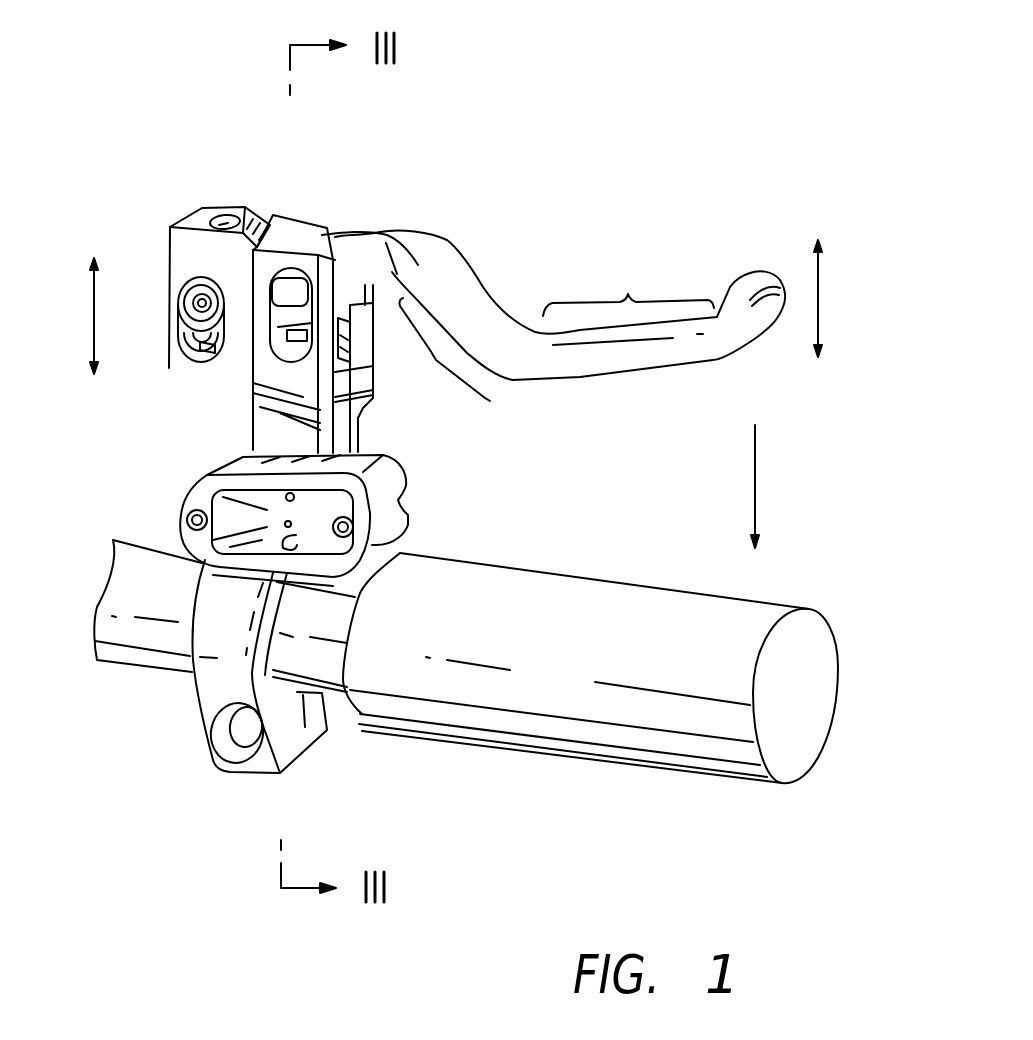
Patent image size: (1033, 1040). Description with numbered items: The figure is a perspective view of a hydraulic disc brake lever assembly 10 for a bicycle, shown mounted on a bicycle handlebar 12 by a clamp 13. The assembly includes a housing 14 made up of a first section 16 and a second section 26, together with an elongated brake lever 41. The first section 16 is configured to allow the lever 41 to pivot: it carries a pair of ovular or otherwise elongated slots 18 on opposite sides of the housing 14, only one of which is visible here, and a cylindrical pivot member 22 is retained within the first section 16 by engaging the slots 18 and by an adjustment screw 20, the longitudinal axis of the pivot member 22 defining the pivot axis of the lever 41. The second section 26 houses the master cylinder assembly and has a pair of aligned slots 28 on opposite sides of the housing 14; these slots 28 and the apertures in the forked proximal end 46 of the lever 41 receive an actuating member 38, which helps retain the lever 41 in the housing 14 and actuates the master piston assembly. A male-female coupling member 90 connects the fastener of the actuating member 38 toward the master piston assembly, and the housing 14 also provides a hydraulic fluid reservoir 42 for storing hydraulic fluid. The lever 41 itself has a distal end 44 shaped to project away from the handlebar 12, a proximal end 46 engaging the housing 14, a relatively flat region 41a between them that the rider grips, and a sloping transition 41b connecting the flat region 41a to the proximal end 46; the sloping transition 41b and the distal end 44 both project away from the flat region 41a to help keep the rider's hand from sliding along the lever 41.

The brake lever assembly 10 is at (660, 438).
The bicycle handlebar 12 is at (632, 652).
The clamp 13 is at (208, 685).
The housing 14 is at (97, 336).
The first section 16 is at (170, 250).
The slots 18 is at (193, 355).
The adjustment screw 20 is at (220, 216).
The pivot member 22 is at (203, 297).
The second section 26 is at (400, 178).
The slots 28 is at (253, 335).
The actuating member 38 is at (283, 283).
The brake lever 41 is at (667, 366).
The relatively flat region 41a is at (628, 282).
The sloping transition 41b is at (438, 349).
The hydraulic fluid reservoir 42 is at (400, 530).
The distal end 44 is at (405, 480).
The proximal end 46 is at (325, 233).
The male-female coupling member 90 is at (340, 320).